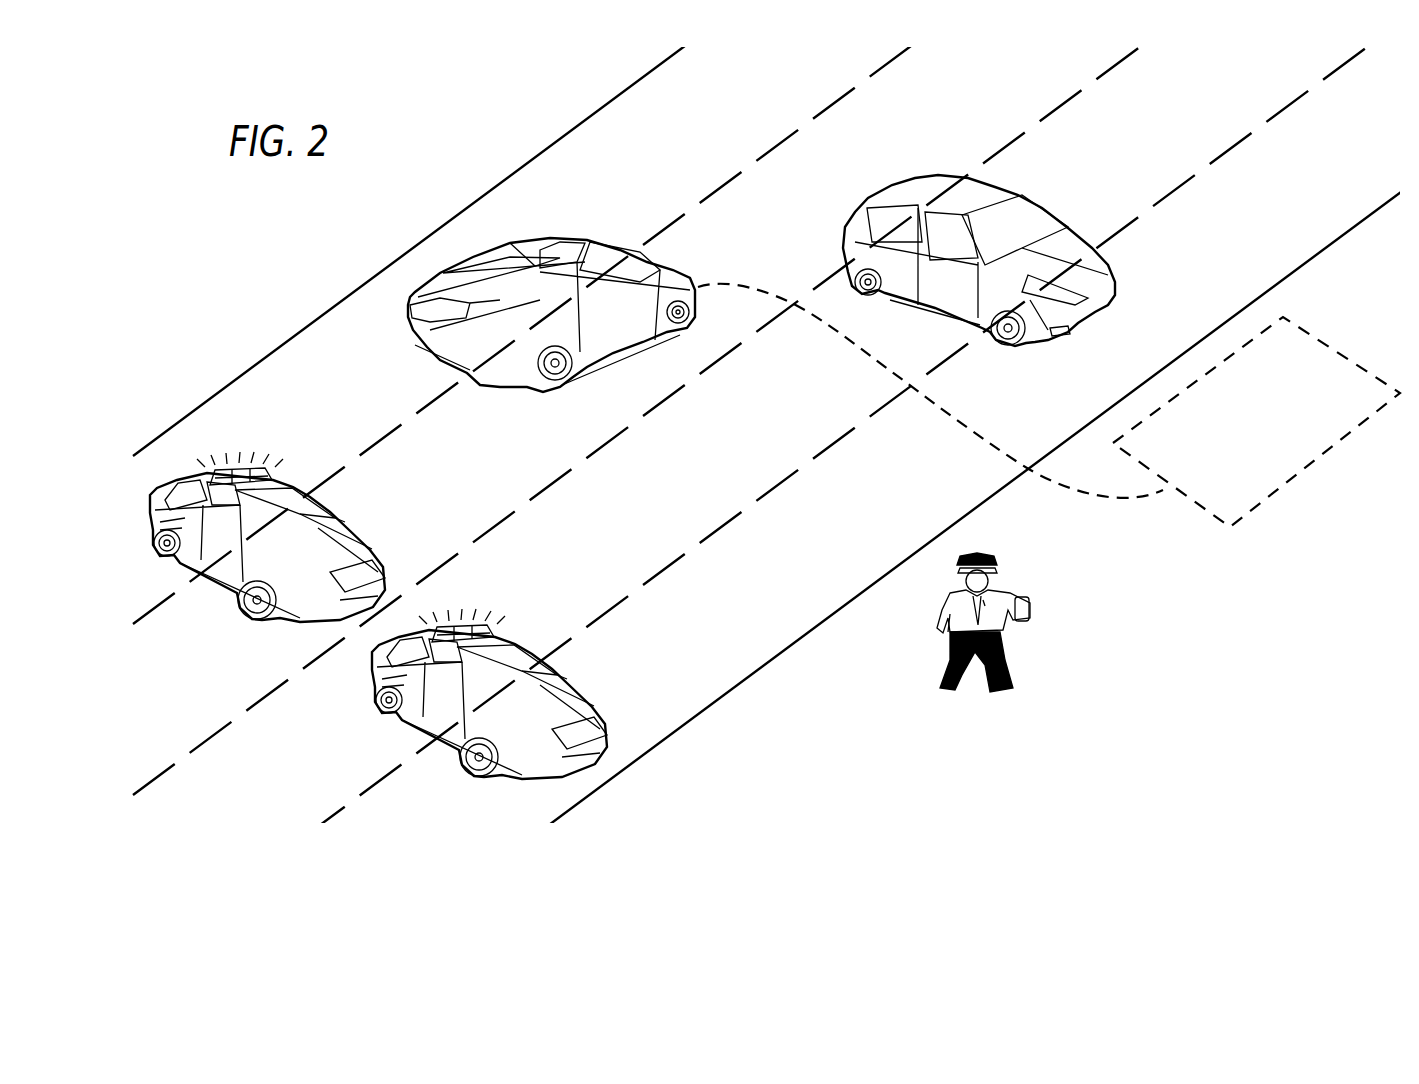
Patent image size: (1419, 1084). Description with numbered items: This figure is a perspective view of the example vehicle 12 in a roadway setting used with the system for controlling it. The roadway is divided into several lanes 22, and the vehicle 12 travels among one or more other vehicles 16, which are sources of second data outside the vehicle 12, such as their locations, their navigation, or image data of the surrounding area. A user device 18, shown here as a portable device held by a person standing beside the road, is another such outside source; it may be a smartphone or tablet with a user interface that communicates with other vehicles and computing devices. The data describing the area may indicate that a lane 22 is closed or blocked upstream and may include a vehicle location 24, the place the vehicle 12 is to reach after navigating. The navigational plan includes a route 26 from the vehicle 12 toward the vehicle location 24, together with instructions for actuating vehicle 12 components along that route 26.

The vehicle 12 is at (560, 237).
The other vehicle 16 is at (1035, 203).
The user device 18 is at (1017, 595).
The lane 22 is at (355, 395).
The vehicle location 24 is at (1248, 512).
The route 26 is at (852, 343).